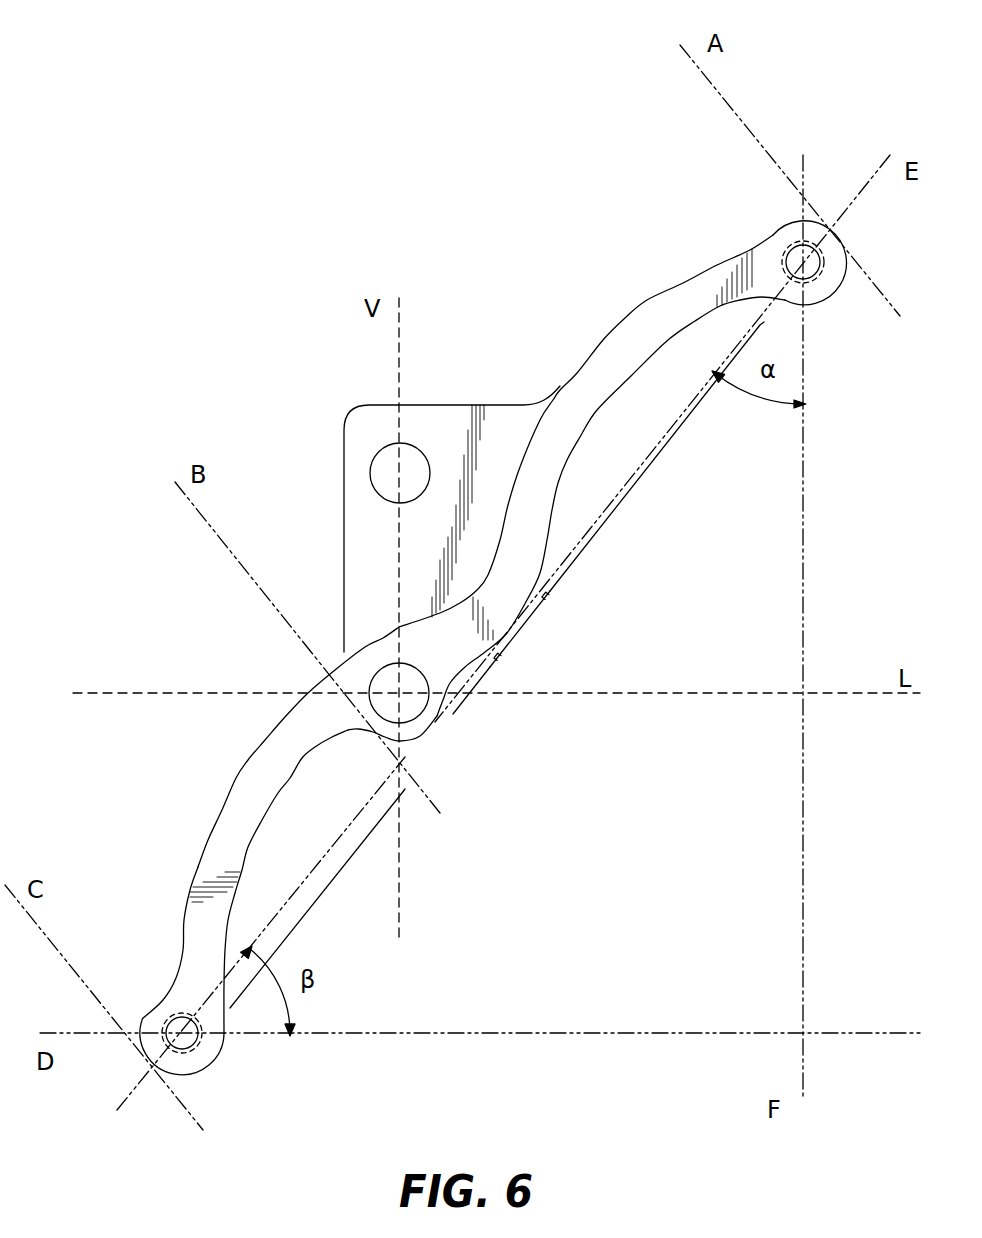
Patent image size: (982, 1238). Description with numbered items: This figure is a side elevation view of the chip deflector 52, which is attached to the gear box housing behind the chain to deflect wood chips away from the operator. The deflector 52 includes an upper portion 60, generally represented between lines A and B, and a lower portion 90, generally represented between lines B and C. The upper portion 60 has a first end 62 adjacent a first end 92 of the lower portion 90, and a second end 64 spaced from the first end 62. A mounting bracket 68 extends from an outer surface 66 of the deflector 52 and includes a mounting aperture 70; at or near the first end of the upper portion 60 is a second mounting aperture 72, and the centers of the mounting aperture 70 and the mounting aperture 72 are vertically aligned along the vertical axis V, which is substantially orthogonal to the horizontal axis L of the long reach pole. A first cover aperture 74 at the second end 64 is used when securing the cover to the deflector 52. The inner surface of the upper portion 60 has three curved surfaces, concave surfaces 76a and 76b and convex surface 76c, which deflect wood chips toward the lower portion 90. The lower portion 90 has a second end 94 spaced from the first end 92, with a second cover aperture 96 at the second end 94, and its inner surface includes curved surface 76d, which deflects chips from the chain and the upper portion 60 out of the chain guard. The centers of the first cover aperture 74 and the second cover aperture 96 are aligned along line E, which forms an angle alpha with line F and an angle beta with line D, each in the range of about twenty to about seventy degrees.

The deflector 52 is at (232, 769).
The upper portion 60 is at (537, 188).
The first end 62 is at (360, 673).
The second end 64 is at (847, 247).
The outer surface 66 is at (641, 300).
The mounting bracket 68 is at (438, 405).
The mounting aperture 70 is at (387, 465).
The second mounting aperture 72 is at (413, 703).
The first cover aperture 74 is at (817, 274).
The concave surface 76a is at (663, 457).
The concave surface 76b is at (477, 683).
The convex surface 76c is at (533, 620).
The curved surface 76d is at (315, 900).
The lower portion 90 is at (67, 817).
The first end 92 is at (297, 723).
The second end 94 is at (157, 1003).
The second cover aperture 96 is at (190, 1040).